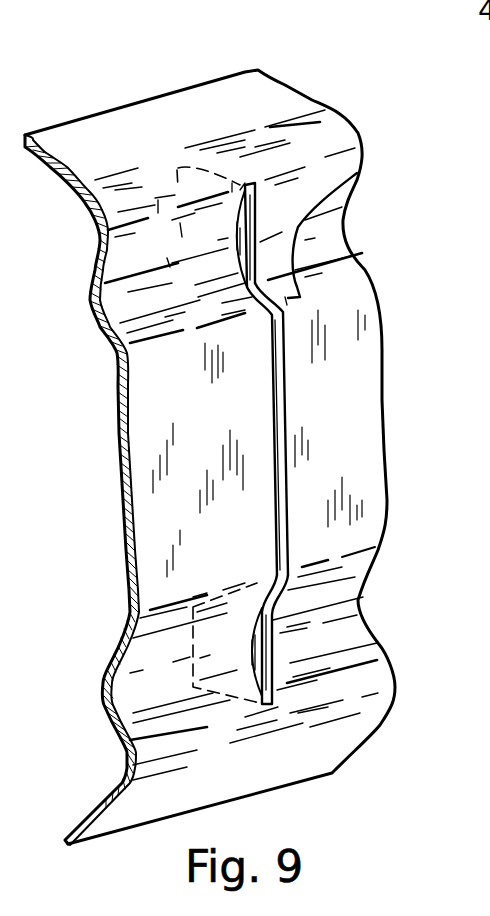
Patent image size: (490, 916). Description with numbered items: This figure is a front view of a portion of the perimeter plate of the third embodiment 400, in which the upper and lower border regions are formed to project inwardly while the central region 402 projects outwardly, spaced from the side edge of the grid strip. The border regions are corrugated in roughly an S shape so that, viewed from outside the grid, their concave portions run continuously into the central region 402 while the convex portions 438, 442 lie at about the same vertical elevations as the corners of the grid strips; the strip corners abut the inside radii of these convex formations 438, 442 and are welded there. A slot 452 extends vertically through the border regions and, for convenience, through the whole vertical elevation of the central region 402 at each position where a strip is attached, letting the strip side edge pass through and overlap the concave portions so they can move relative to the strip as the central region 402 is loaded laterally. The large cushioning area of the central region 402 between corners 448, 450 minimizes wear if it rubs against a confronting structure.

The third embodiment 400 is at (107, 105).
The central region 402 is at (358, 433).
The convex portion 438 is at (300, 166).
The corner 448 is at (355, 180).
The slot 452 is at (278, 397).
The convex portion 442 is at (338, 690).
The corner 450 is at (342, 557).